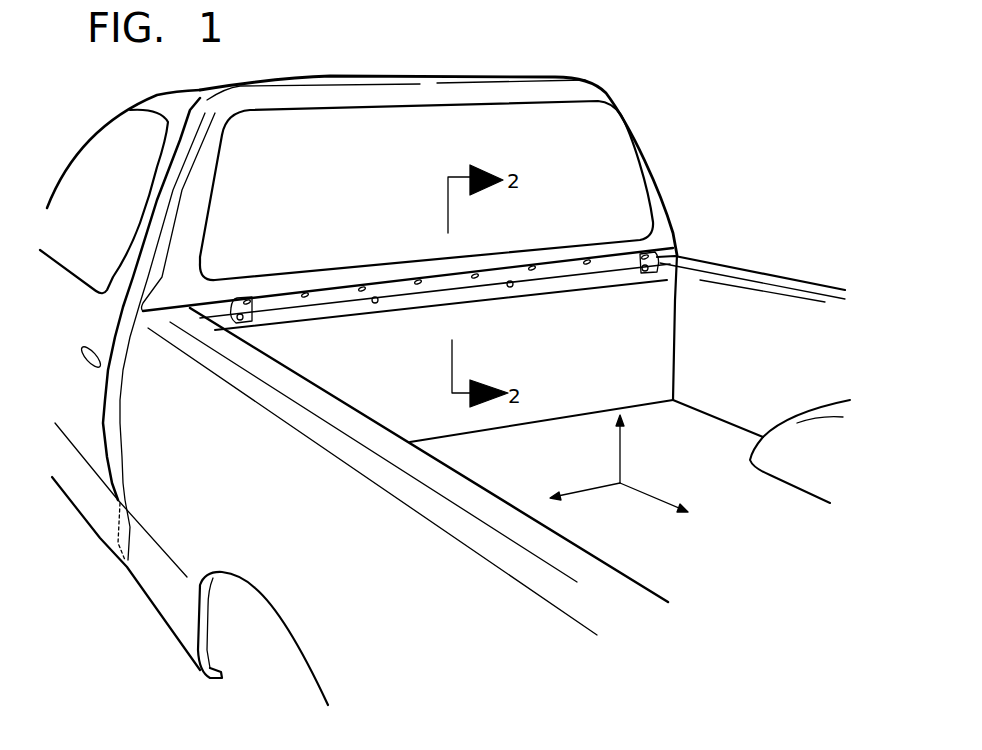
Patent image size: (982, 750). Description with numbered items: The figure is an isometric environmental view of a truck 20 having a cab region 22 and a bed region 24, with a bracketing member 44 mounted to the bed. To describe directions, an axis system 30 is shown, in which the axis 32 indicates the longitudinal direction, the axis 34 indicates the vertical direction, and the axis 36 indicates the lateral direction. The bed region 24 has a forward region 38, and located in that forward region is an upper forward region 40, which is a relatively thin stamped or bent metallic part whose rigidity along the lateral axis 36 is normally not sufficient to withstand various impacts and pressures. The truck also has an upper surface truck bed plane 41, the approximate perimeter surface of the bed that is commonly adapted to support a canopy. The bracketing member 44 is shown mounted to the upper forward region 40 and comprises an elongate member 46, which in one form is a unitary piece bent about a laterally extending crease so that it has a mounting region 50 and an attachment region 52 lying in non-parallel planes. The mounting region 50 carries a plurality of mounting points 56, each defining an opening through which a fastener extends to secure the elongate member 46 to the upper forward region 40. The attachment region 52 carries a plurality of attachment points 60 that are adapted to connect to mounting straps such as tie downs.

The truck 20 is at (652, 117).
The cab region 22 is at (567, 75).
The bed region 24 is at (793, 278).
The axis system 30 is at (652, 480).
The axis 32 is at (647, 497).
The axis 34 is at (620, 453).
The axis 36 is at (585, 488).
The forward region 38 is at (670, 305).
The upper forward region 40 is at (222, 318).
The upper surface truck bed plane 41 is at (260, 367).
The bracketing member 44 is at (408, 283).
The elongate member 46 is at (493, 298).
The mounting region 50 is at (477, 303).
The attachment region 52 is at (390, 285).
The mounting points 56 is at (247, 318).
The attachment points 60 is at (532, 268).